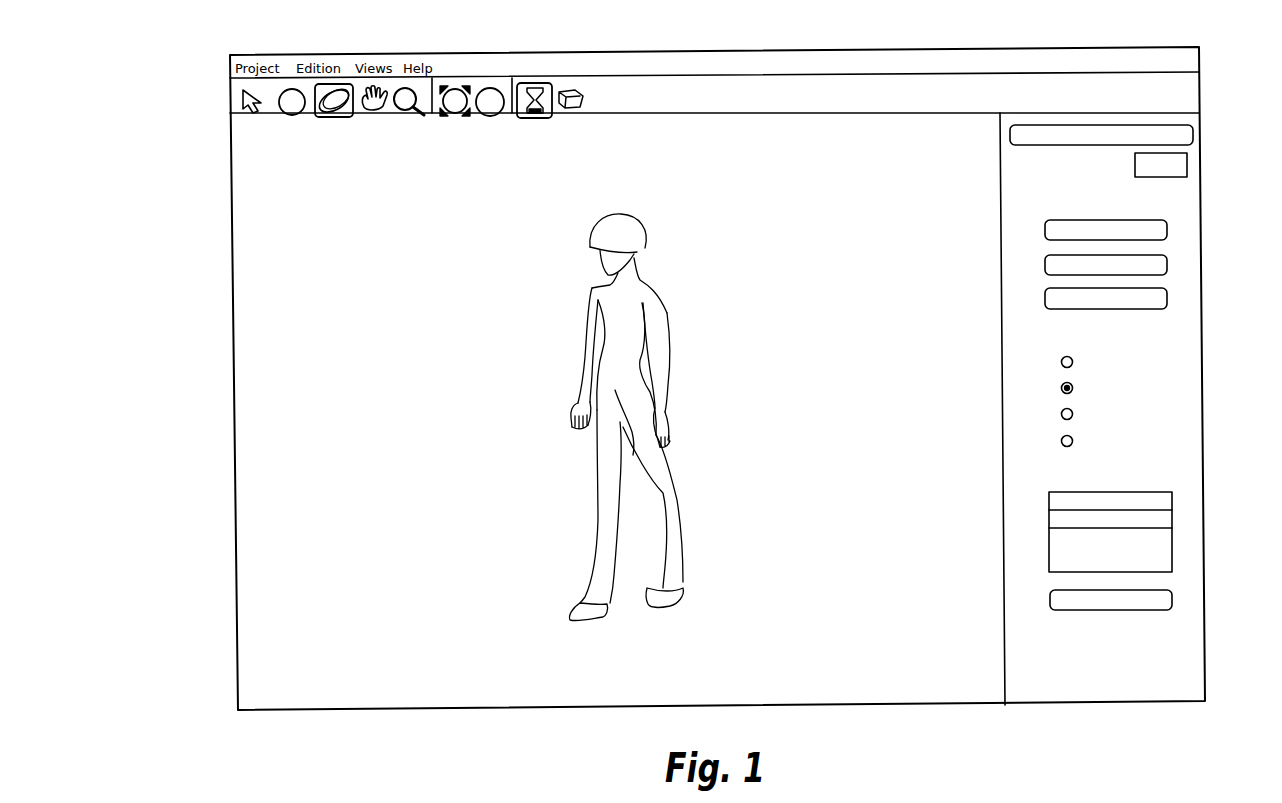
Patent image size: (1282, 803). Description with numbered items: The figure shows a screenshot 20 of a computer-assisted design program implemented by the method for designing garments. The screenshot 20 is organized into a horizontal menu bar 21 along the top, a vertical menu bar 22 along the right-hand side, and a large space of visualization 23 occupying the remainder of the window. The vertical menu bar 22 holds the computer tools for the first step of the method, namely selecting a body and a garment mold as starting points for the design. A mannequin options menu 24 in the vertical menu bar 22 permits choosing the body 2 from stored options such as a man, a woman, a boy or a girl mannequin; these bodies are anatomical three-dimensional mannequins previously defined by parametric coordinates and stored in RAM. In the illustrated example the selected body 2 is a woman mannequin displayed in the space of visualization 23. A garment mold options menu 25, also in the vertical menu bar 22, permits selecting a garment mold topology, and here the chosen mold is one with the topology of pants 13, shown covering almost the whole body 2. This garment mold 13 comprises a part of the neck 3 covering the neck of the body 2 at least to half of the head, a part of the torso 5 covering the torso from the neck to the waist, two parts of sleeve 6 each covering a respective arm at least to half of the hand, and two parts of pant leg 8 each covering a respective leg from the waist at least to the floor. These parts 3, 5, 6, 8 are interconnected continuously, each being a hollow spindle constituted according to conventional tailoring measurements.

The body 2 is at (607, 233).
The part of the neck 3 is at (638, 258).
The part of the torso 5 is at (617, 300).
The parts of sleeve 6 is at (590, 360).
The parts of pant leg 8 is at (608, 508).
The garment mold with the topology of pants 13 is at (638, 411).
The screenshot 20 is at (461, 706).
The horizontal menu bar 21 is at (239, 105).
The vertical menu bar 22 is at (1173, 658).
The space of visualization 23 is at (272, 423).
The mannequin options menu 24 is at (1168, 382).
The garment mold options menu 25 is at (1173, 542).